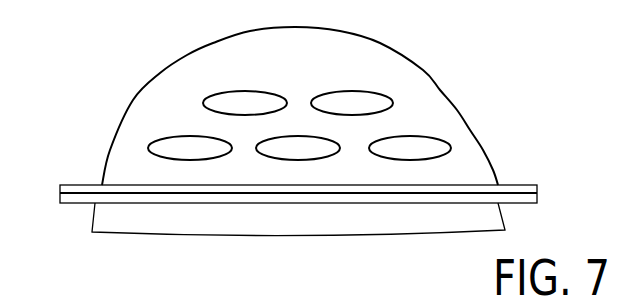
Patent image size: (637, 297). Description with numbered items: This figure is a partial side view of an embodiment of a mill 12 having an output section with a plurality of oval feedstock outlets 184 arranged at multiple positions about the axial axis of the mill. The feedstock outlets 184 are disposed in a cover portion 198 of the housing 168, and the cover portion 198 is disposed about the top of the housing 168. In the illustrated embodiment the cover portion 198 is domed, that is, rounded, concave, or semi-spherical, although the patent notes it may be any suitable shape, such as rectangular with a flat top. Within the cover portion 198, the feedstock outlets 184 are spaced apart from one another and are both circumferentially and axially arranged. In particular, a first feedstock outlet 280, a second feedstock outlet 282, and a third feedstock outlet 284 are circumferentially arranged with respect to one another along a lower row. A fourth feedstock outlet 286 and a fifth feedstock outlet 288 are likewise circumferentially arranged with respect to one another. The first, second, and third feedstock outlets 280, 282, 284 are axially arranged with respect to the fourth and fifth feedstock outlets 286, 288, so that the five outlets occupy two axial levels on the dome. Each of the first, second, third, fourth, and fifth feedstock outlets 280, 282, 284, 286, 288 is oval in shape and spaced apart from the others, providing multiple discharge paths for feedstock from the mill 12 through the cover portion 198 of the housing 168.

The mill 12 is at (96, 37).
The cover portion 198 is at (430, 72).
The housing 168 is at (483, 148).
The feedstock outlets 184 is at (297, 136).
The first feedstock outlet 280 is at (190, 160).
The second feedstock outlet 282 is at (298, 160).
The third feedstock outlet 284 is at (410, 160).
The fourth feedstock outlet 286 is at (276, 94).
The fifth feedstock outlet 288 is at (347, 92).